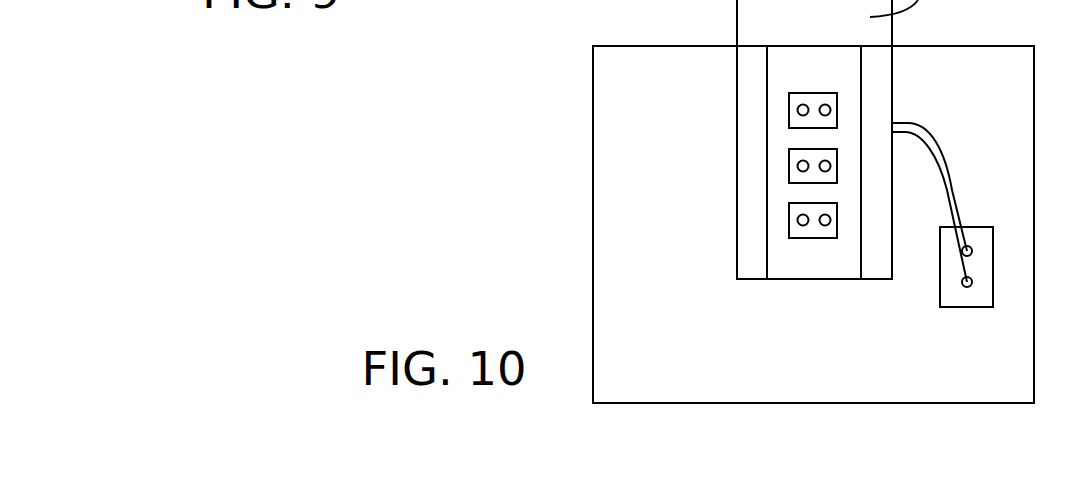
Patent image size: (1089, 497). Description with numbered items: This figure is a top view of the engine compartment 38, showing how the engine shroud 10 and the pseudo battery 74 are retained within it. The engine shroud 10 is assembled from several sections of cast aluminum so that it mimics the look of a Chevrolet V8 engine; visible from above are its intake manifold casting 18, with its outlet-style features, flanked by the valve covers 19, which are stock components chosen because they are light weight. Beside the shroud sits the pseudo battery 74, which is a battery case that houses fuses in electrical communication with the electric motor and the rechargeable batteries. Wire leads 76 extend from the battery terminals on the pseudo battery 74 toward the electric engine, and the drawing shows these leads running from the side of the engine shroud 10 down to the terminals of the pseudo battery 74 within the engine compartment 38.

The engine shroud 10 is at (760, 226).
The intake manifold casting 18 is at (795, 210).
The valve covers 19 is at (750, 113).
The engine compartment 38 is at (828, 362).
The pseudo battery 74 is at (980, 265).
The wire leads 76 is at (945, 162).